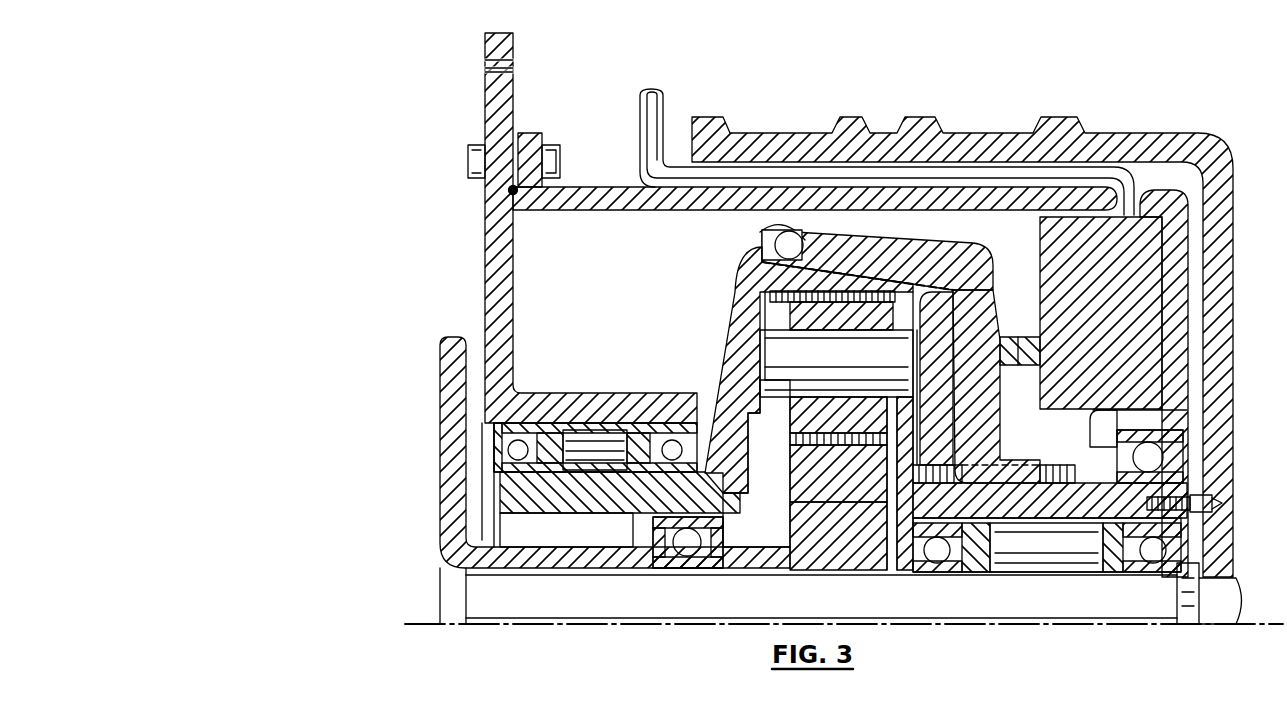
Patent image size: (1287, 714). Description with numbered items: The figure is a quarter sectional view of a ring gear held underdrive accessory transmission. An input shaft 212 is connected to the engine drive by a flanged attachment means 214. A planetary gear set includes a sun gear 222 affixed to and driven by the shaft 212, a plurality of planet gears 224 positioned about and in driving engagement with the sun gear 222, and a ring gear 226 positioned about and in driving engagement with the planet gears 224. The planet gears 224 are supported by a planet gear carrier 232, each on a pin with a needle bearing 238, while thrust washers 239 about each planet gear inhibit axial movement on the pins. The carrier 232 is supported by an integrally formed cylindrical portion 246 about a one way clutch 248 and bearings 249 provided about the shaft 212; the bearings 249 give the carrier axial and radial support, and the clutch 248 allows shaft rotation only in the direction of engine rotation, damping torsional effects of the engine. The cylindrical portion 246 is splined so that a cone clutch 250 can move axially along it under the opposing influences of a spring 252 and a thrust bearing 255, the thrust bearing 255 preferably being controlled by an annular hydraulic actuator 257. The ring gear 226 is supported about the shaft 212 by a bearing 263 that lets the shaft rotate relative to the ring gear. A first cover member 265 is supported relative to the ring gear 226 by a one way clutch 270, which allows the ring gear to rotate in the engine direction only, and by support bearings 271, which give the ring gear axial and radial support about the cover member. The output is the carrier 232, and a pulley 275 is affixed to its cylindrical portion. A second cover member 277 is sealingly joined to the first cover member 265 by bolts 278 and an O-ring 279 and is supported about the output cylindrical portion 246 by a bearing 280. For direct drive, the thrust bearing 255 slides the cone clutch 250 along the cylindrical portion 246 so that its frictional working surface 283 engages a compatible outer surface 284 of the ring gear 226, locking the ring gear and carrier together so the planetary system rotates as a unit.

The input shaft 212 is at (585, 603).
The flanged attachment means 214 is at (440, 552).
The sun gear 222 is at (863, 533).
The planet gears 224 is at (735, 308).
The ring gear 226 is at (653, 497).
The planet gear carrier 232 is at (880, 467).
The needle bearing 238 is at (790, 331).
The thrust washers 239 is at (893, 302).
The cylindrical portion 246 is at (1066, 483).
The one way clutch 248 is at (1067, 550).
The bearings 249 is at (938, 558).
The cone clutch 250 is at (900, 243).
The spring 252 is at (968, 290).
The thrust bearing 255 is at (1008, 337).
The annular hydraulic actuator 257 is at (1135, 288).
The bearing 263 is at (690, 550).
The first cover member 265 is at (485, 47).
The one way clutch 270 is at (597, 440).
The support bearings 271 is at (494, 441).
The pulley 275 is at (1218, 219).
The second cover member 277 is at (748, 198).
The bolts 278 is at (477, 158).
The O-ring 279 is at (508, 191).
The bearing 280 is at (1197, 487).
The frictional working surface 283 is at (762, 224).
The outer surface 284 is at (775, 249).